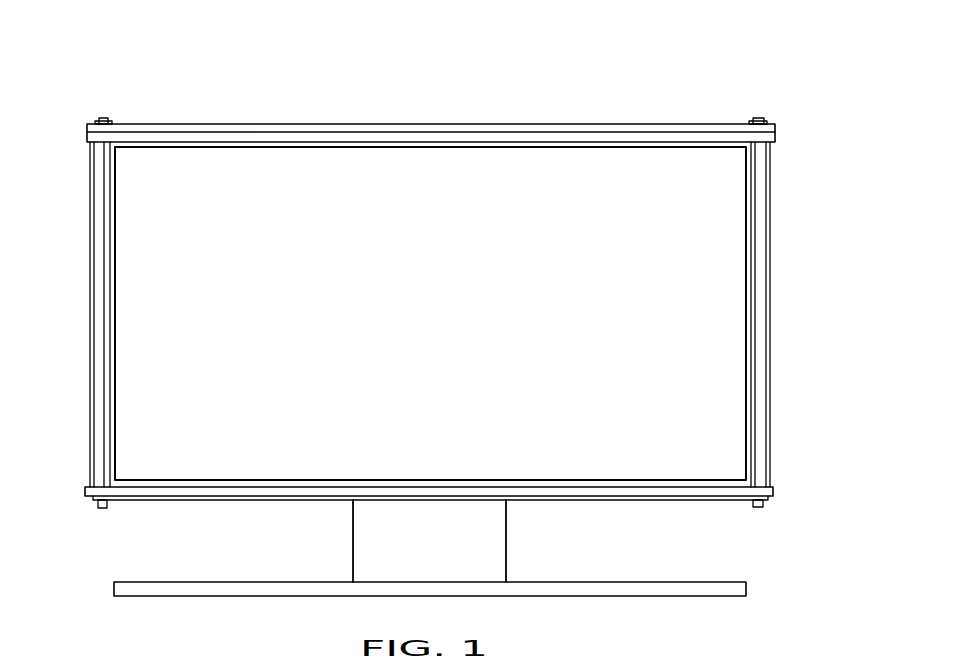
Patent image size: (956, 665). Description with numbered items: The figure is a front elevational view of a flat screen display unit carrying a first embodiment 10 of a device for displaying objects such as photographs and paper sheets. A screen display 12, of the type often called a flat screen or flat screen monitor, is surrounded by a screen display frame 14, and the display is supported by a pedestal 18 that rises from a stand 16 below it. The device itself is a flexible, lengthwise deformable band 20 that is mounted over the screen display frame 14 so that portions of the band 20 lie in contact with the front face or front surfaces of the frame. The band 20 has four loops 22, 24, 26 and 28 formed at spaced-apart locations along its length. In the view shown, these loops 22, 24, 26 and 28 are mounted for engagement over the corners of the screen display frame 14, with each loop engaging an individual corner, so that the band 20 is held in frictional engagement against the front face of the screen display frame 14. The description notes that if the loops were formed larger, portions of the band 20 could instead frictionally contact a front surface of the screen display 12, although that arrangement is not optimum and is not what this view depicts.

The first embodiment of the device 10 is at (434, 327).
The screen display 12 is at (242, 190).
The screen display frame 14 is at (92, 298).
The stand 16 is at (723, 596).
The pedestal 18 is at (493, 548).
The flexible, lengthwise deformable band 20 is at (758, 225).
The loop 22 is at (757, 118).
The loop 24 is at (773, 488).
The loop 26 is at (100, 510).
The loop 28 is at (103, 118).